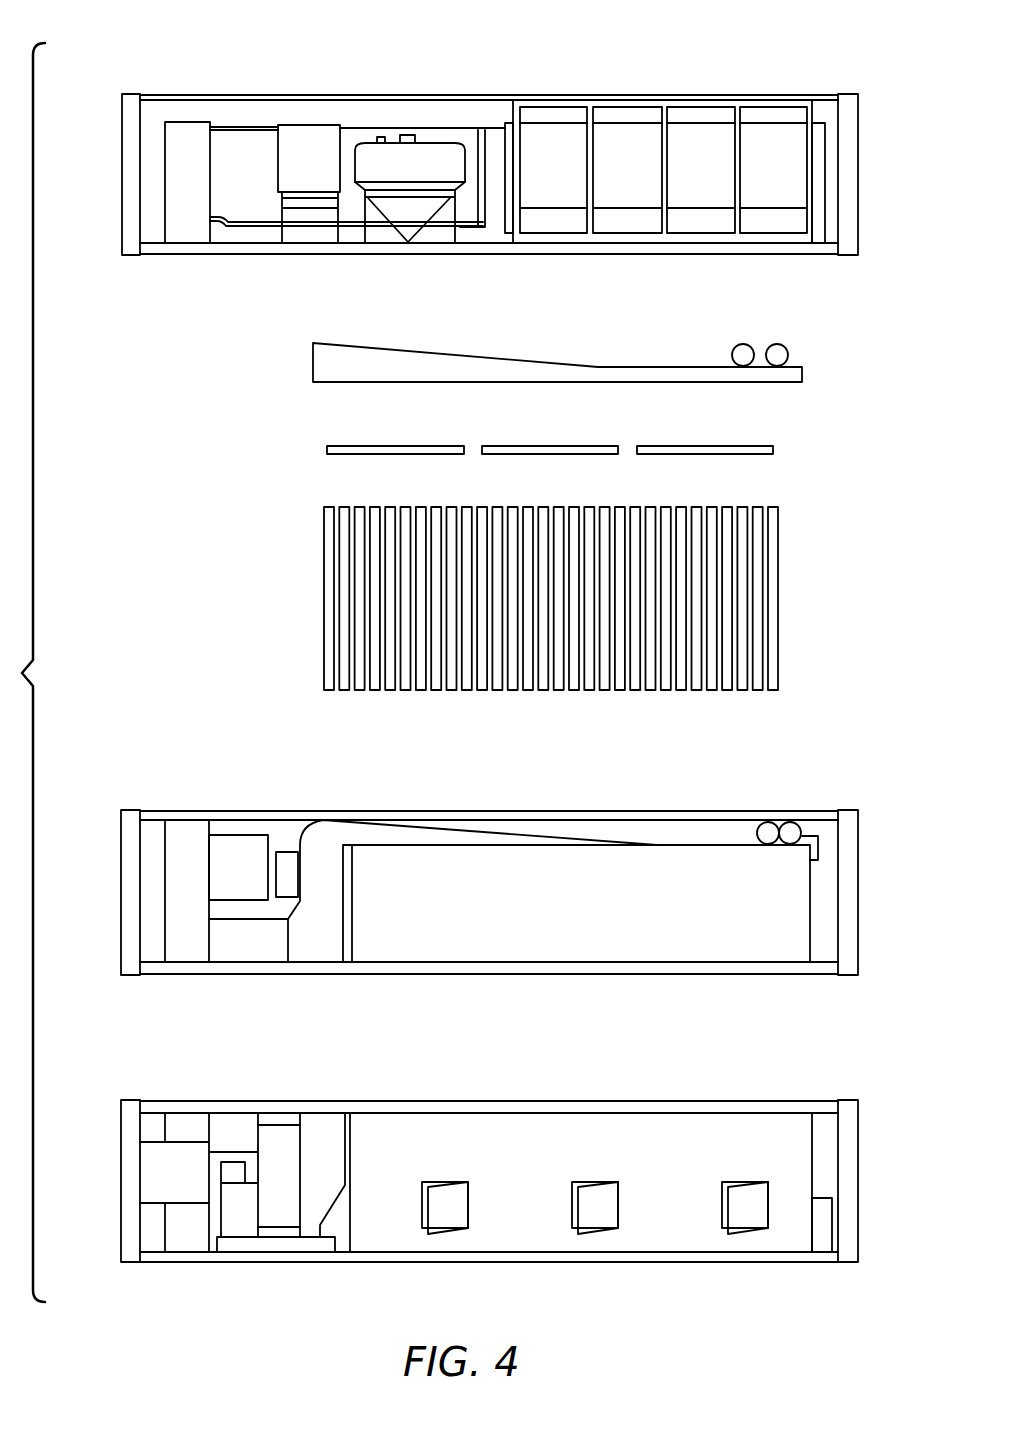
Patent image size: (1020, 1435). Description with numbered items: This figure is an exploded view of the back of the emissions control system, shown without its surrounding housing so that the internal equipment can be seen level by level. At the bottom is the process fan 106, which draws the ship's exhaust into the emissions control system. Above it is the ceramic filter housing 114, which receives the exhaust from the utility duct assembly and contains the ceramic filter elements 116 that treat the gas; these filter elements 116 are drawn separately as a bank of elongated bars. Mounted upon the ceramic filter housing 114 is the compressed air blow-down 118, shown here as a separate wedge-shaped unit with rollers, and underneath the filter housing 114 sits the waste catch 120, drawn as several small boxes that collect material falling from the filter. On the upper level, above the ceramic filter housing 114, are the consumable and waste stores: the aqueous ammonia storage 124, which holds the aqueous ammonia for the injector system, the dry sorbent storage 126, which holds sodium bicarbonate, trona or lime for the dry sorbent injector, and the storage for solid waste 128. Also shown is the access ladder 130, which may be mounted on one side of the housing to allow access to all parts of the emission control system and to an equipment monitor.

The process fan 106 is at (288, 1200).
The ceramic filter housing 114 is at (680, 927).
The ceramic filter elements 116 is at (778, 583).
The compressed air blow-down 118 is at (802, 372).
The waste catch 120 is at (448, 1210).
The aqueous ammonia storage 124 is at (700, 157).
The dry sorbent storage 126 is at (312, 160).
The solid waste storage 128 is at (436, 177).
The access ladder 130 is at (177, 224).